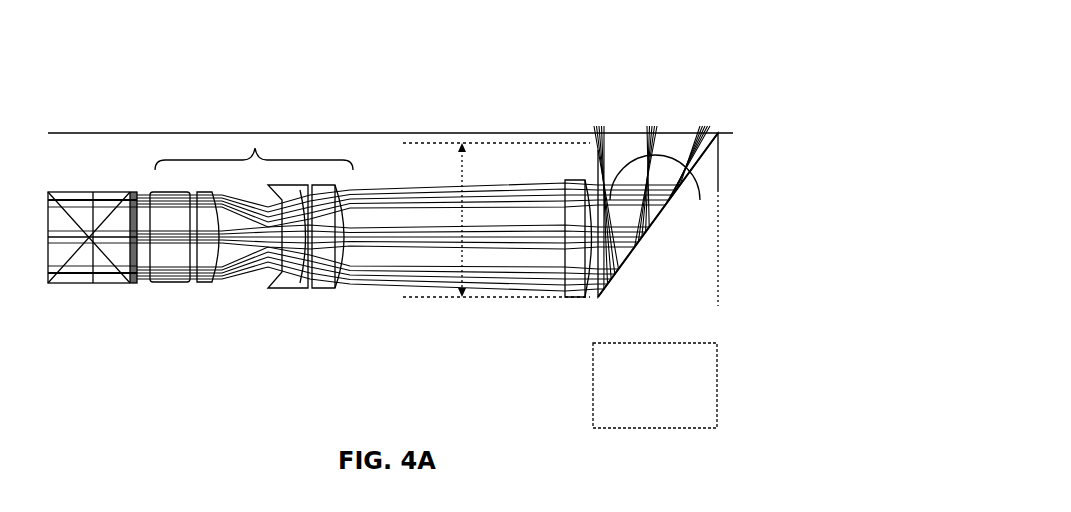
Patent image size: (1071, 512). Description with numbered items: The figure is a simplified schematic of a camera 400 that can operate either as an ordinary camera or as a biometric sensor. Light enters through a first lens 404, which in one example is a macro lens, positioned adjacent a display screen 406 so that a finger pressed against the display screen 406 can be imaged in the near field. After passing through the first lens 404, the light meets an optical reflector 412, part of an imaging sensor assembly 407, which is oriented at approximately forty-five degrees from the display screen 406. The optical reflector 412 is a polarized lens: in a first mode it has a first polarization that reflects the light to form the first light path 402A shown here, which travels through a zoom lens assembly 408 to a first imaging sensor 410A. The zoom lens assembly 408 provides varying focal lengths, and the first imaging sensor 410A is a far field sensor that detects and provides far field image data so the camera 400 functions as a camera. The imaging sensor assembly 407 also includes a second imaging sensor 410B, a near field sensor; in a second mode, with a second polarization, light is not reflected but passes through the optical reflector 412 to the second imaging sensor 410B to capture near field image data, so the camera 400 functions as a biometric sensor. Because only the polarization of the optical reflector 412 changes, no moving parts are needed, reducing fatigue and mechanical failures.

The camera 400 is at (707, 83).
The first light path 402A is at (513, 204).
The first lens 404 is at (720, 170).
The display screen 406 is at (376, 132).
The imaging sensor assembly 407 is at (390, 311).
The zoom lens assembly 408 is at (285, 298).
The first imaging sensor 410A is at (76, 284).
The second imaging sensor 410B is at (718, 386).
The optical reflector 412 is at (677, 215).